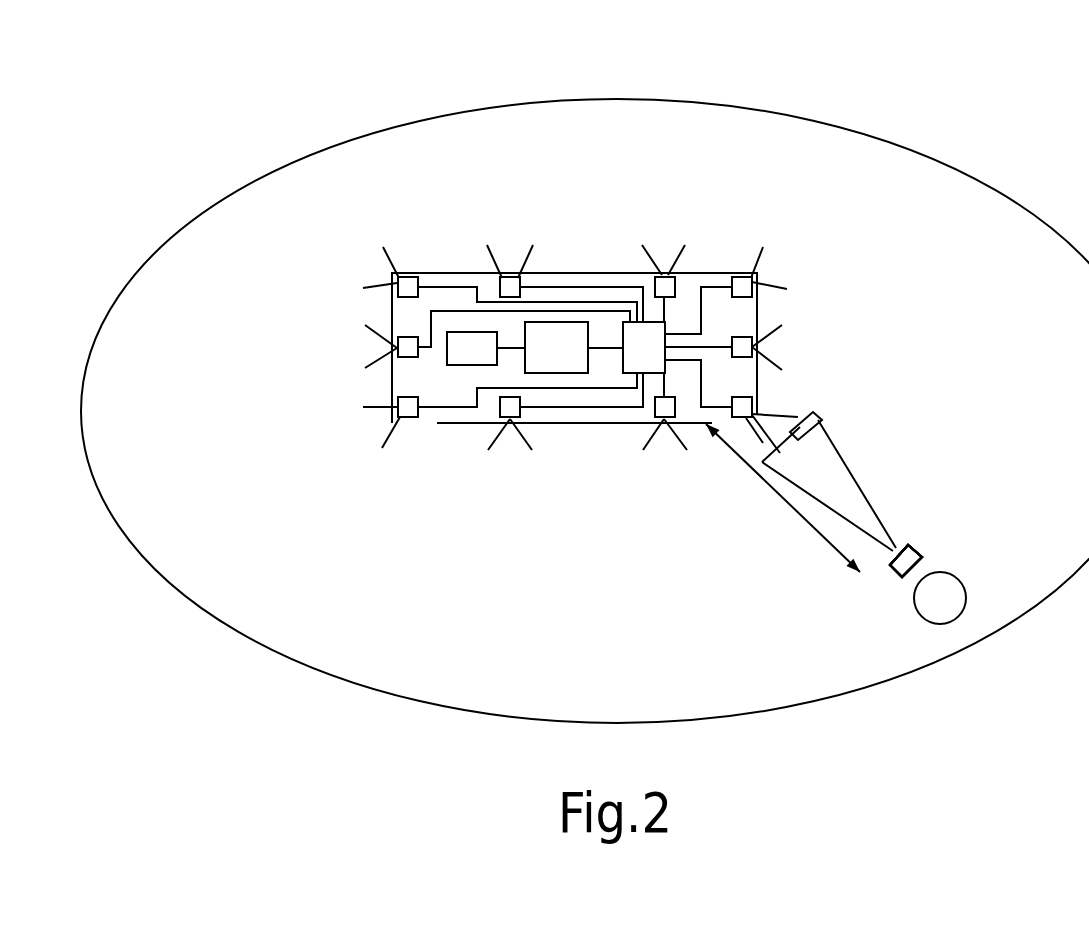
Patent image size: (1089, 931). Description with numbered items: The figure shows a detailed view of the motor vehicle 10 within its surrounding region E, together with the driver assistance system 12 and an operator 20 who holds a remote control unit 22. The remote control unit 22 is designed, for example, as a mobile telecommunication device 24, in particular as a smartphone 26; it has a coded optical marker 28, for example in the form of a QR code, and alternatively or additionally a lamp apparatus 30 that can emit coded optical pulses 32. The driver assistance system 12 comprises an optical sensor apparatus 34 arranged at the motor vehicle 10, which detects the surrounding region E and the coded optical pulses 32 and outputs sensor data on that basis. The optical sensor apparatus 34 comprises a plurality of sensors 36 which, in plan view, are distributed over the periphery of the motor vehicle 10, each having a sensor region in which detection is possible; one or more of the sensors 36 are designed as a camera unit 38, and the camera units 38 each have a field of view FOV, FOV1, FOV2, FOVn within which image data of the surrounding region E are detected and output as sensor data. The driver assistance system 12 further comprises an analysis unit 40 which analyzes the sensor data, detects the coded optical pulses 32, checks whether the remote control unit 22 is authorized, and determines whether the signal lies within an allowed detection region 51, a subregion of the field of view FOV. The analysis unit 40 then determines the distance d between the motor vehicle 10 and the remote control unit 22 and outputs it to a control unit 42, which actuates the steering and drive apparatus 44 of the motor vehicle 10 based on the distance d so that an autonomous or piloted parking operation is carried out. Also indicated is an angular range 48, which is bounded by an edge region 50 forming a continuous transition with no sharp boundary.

The surrounding region E is at (872, 136).
The motor vehicle 10 is at (358, 308).
The driver assistance system 12 is at (510, 180).
The optical sensor apparatus 34 is at (367, 220).
The sensors 36 is at (407, 278).
The camera unit 38 is at (517, 285).
The analysis unit 40 is at (664, 330).
The control unit 42 is at (556, 347).
The steering and drive apparatus 44 is at (457, 348).
The field of view FOVn is at (517, 280).
The field of view FOV1 is at (684, 247).
The field of view FOV2 is at (520, 447).
The field of view FOV is at (778, 412).
The edge region 50 is at (825, 432).
The detection region 51 is at (802, 433).
The distance d is at (777, 496).
The coded optical pulses 32 is at (893, 530).
The coded optical marker 28 is at (905, 545).
The lamp apparatus 30 is at (905, 545).
The mobile telecommunication device 24 is at (918, 547).
The smartphone 26 is at (918, 547).
The angular range 48 is at (888, 553).
The remote control unit 22 is at (902, 578).
The operator 20 is at (967, 587).